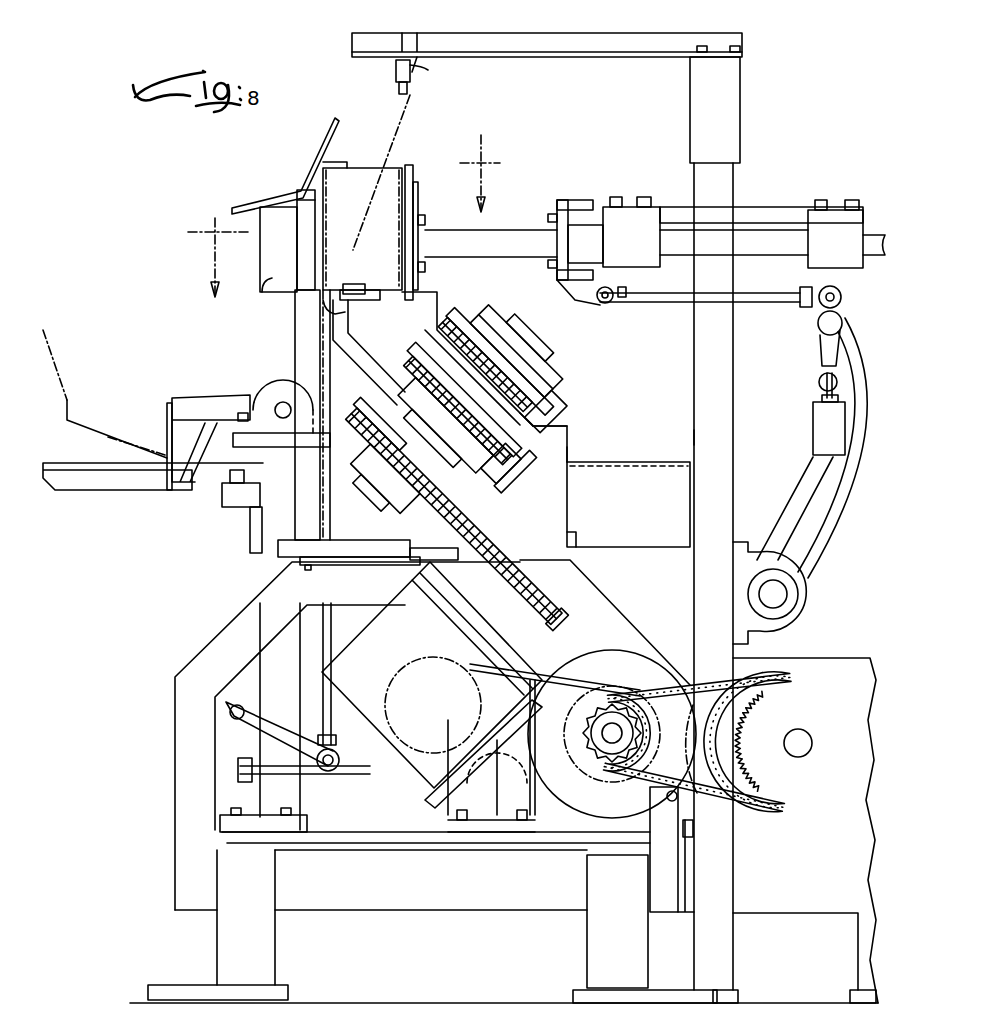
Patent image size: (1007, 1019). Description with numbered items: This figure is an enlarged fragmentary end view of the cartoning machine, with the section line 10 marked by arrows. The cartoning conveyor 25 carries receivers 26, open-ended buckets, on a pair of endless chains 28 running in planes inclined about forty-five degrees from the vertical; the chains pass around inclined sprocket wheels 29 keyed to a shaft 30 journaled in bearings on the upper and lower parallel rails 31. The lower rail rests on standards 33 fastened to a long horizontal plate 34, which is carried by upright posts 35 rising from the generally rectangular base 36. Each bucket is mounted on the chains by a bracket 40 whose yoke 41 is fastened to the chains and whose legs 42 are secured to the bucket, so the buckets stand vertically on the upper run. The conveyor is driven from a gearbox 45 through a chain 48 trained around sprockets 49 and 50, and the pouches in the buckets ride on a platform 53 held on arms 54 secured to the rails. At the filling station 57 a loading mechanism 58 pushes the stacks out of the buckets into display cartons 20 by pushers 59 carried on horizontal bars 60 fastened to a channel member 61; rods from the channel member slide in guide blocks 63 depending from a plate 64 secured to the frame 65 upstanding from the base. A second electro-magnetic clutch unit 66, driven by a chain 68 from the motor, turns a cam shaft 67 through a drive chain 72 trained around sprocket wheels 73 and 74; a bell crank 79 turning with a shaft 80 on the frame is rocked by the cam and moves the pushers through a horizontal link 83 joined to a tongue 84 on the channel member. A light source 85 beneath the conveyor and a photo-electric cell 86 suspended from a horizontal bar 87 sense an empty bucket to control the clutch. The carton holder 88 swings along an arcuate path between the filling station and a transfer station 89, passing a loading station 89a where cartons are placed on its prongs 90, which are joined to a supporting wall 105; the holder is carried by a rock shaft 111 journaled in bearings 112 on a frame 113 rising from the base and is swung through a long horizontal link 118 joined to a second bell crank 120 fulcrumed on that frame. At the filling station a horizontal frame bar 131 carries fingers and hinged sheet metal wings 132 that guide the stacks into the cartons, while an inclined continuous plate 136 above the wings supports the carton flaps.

The section line 10- 10 is at (351, 213).
The display cartons 20 is at (118, 432).
The cartoning conveyor 25 is at (501, 312).
The receivers 26 is at (361, 156).
The endless chains 28 is at (525, 410).
The sprocket wheels 29 is at (510, 455).
The shaft 30 is at (378, 462).
The rails 31 is at (535, 393).
The standards 33 is at (405, 497).
The horizontal plate 34 is at (420, 560).
The upright posts 35 is at (235, 630).
The base 36 is at (396, 905).
The bracket 40 is at (560, 440).
The yoke 41 is at (528, 445).
The legs 42 is at (605, 460).
The gearbox 45 is at (360, 642).
The chain 48 is at (455, 525).
The sprocket 49 is at (535, 610).
The sprocket 50 is at (375, 443).
The platform 53 is at (374, 298).
The arms 54 is at (365, 362).
The filling station 57 is at (245, 185).
The loading mechanism 58 is at (641, 130).
The pushers 59 is at (410, 170).
The horizontal bars 60 is at (512, 232).
The channel member 61 is at (575, 198).
The guide blocks 63 is at (640, 215).
The plate 64 is at (786, 205).
The frame 65 is at (733, 437).
The second electro-magnetic clutch unit 66 is at (612, 652).
The cam shaft 67 is at (806, 750).
The chain 68 is at (538, 680).
The drive chain 72 is at (757, 800).
The sprocket wheel 73 is at (645, 724).
The sprocket wheel 74 is at (738, 757).
The bell crank 79 is at (815, 483).
The shaft 80 is at (787, 601).
The horizontal link 83 is at (676, 305).
The tongue 84 is at (600, 304).
The light source 85 is at (345, 312).
The photo-electric cell 86 is at (405, 153).
The horizontal bar 87 is at (538, 45).
The holder 88 is at (203, 392).
The transfer station 89 is at (139, 505).
The loading station 89a is at (140, 338).
The prongs 90 is at (103, 488).
The supporting wall 105 is at (165, 412).
The rock shaft 111 is at (275, 392).
The bearings 112 is at (283, 380).
The frame 113 is at (265, 577).
The horizontal link 118 is at (360, 765).
The second bell crank 120 is at (305, 775).
The horizontal frame bar 131 is at (297, 318).
The sheet metal wings 132 is at (297, 295).
The inclined continuous plate 136 is at (322, 148).